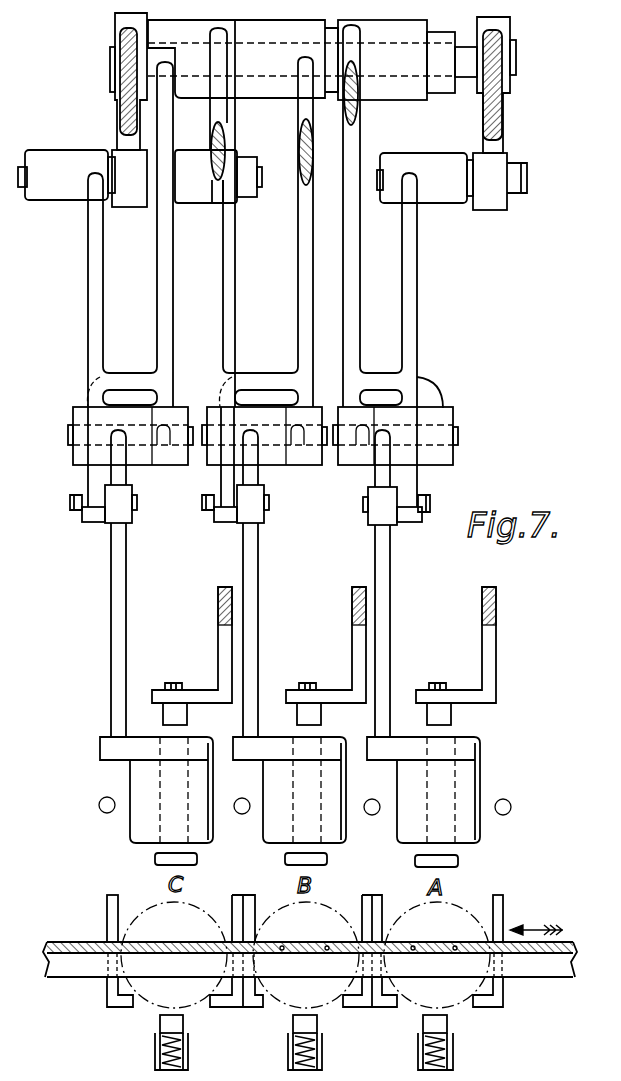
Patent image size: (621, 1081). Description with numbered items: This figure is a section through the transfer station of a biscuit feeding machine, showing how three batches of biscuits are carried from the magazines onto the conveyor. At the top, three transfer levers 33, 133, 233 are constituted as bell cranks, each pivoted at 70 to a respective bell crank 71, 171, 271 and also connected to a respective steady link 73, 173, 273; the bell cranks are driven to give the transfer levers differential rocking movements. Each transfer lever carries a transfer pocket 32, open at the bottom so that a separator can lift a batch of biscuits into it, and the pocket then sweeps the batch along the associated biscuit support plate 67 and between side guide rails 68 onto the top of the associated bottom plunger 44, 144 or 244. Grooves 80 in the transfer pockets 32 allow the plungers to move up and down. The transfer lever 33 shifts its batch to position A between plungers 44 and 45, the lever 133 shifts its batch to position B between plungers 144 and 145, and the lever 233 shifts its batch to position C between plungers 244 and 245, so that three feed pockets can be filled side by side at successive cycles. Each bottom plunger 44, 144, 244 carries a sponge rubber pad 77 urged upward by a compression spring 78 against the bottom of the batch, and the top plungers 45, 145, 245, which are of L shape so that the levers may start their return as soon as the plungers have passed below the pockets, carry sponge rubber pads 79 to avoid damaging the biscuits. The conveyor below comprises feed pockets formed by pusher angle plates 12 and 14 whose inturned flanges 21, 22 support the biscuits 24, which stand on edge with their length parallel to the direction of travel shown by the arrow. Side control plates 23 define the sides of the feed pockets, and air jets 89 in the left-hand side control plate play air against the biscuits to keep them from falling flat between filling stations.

The steady link 273 is at (88, 272).
The bell crank 271 is at (217, 180).
The steady link 173 is at (235, 308).
The bell crank 171 is at (300, 240).
The bell crank 71 is at (357, 240).
The steady link 73 is at (412, 312).
The pivot 70 is at (458, 433).
The transfer lever 233 is at (118, 552).
The transfer lever 133 is at (252, 555).
The transfer lever 33 is at (383, 555).
The top plunger 245 is at (222, 641).
The top plunger 145 is at (356, 641).
The top plunger 45 is at (495, 641).
The sponge rubber pad 79 is at (182, 716).
The transfer pocket 32 is at (267, 780).
The groove 80 is at (167, 818).
The side guide 68 is at (107, 797).
The biscuit support plate 67 is at (157, 858).
The side control plate 23 is at (50, 942).
The air jet 89 is at (315, 947).
The angle plate 14 is at (107, 905).
The angle plate 12 is at (232, 905).
The inturned flange 21 is at (228, 1007).
The inturned flange 22 is at (256, 1007).
The biscuit 24 is at (148, 913).
The sponge rubber pad 77 is at (160, 1025).
The compression spring 78 is at (160, 1062).
The bottom plunger 244 is at (188, 1058).
The bottom plunger 144 is at (322, 1060).
The bottom plunger 44 is at (453, 1062).